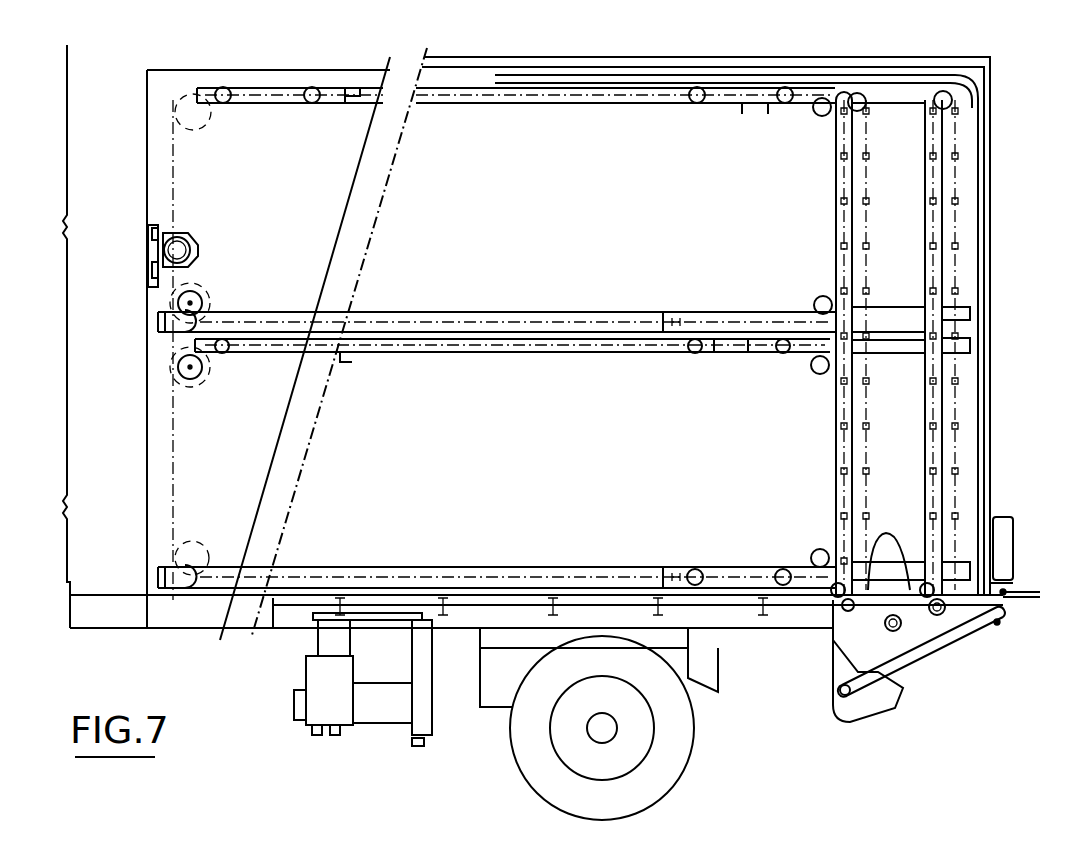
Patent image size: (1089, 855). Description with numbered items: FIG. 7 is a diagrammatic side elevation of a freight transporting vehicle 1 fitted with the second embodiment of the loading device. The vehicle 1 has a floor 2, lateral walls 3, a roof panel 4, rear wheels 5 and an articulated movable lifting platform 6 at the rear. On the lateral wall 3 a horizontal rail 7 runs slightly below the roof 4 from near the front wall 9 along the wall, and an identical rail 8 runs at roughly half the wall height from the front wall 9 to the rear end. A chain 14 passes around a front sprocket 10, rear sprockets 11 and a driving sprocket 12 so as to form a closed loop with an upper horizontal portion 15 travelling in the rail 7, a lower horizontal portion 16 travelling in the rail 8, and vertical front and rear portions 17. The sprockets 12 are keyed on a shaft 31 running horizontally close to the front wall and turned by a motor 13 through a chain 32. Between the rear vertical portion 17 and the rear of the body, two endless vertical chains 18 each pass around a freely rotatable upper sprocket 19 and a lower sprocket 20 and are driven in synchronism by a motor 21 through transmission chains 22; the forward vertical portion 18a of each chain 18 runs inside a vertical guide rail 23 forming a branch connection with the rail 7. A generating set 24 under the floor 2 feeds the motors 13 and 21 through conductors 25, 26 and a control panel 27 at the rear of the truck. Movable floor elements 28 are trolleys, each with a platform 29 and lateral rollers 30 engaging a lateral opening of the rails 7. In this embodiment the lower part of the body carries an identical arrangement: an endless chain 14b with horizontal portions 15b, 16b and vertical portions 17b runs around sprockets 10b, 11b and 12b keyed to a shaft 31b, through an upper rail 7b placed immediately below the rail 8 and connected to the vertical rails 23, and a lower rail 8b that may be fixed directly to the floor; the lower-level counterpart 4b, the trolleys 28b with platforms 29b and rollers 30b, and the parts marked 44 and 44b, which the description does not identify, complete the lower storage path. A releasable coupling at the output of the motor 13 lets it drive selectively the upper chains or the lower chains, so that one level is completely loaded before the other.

The freight transporting vehicle 1 is at (217, 653).
The floor 2 is at (480, 598).
The lateral wall 3 is at (706, 326).
The roof panel 4 is at (604, 78).
The lower-portion counterpart of the roof panel 4b is at (561, 354).
The rear wheels 5 is at (708, 733).
The articulated movable lifting platform 6 is at (1028, 600).
The upper horizontal rail 7 is at (421, 103).
The lower-arrangement upper rail 7b is at (428, 354).
The intermediate horizontal rail 8 is at (576, 312).
The lower-arrangement lower rail 8b is at (558, 567).
The front wall 9 is at (147, 160).
The front chain sprocket 10 is at (194, 123).
The lower front chain sprocket 10b is at (175, 558).
The rear chain sprocket 11 is at (818, 115).
The lower rear chain sprocket 11b is at (818, 372).
The driving sprocket 12 is at (190, 303).
The lower driving sprocket 12b is at (208, 370).
The motor 13 is at (190, 232).
The chain 14 is at (499, 315).
The lower endless chain 14b is at (500, 572).
The upper horizontal chain portion 15 is at (350, 103).
The lower-arrangement upper horizontal chain portion 15b is at (345, 354).
The lower horizontal chain portion 16 is at (445, 312).
The lower-arrangement lower horizontal chain portion 16b is at (442, 567).
The vertical chain portion 17 is at (836, 175).
The lower-arrangement vertical chain portion 17b is at (175, 426).
The endless vertical chain 18 is at (925, 180).
The forward vertical portion of vertical chain 18a is at (864, 430).
The upper chain sprocket 19 is at (935, 102).
The lower chain sprocket 20 is at (893, 574).
The motor 21 is at (900, 635).
The transmission chain 22 is at (850, 640).
The vertical guide rail 23 is at (923, 478).
The generating set 24 is at (370, 714).
The conductor 25 is at (1016, 586).
The conductor 26 is at (692, 605).
The control panel 27 is at (1013, 540).
The movable floor element 28 is at (745, 112).
The lower movable floor element 28b is at (712, 362).
The platform 29 is at (768, 104).
The lower trolley platform 29b is at (748, 350).
The lateral roller 30 is at (698, 103).
The lower lateral roller 30b is at (688, 354).
The shaft 31 is at (190, 303).
The lower shaft 31b is at (190, 367).
The chain 32 is at (200, 258).
The carrier hook 44 is at (808, 298).
The lower carrier hook 44b is at (815, 560).